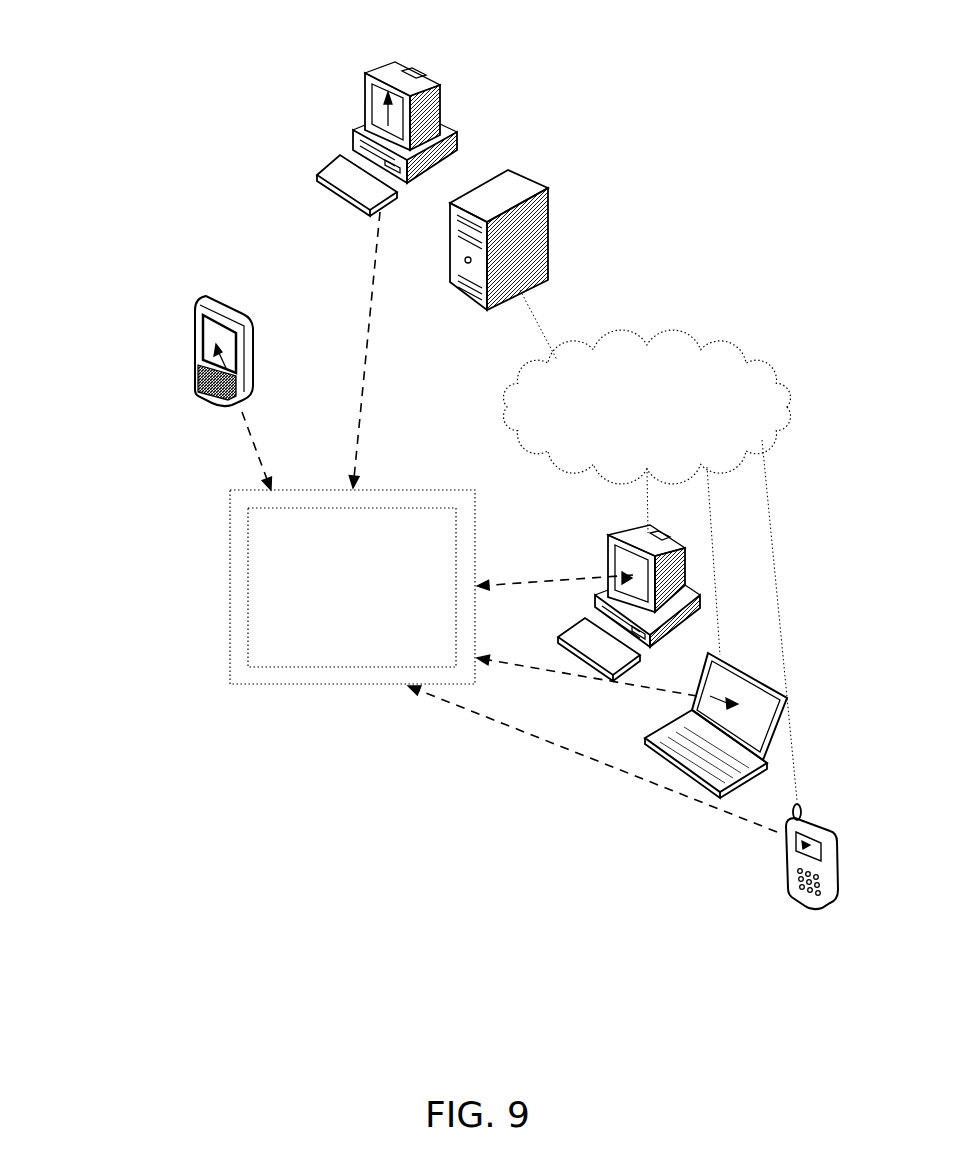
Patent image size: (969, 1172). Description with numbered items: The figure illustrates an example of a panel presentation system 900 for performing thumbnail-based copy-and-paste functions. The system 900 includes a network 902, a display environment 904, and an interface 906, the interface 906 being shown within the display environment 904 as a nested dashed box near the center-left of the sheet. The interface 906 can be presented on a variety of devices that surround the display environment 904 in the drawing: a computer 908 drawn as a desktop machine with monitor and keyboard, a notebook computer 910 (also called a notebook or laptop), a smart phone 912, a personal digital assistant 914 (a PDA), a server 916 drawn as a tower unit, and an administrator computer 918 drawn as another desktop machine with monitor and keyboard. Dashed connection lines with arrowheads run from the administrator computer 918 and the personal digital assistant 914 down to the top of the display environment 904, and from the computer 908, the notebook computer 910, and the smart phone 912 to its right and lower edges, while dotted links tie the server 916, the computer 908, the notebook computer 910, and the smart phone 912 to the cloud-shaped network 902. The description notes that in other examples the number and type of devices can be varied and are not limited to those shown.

The panel presentation system 900 is at (145, 98).
The network 902 is at (667, 446).
The display environment 904 is at (315, 488).
The interface 906 is at (372, 592).
The computer 908 is at (661, 534).
The notebook computer 910 is at (736, 661).
The smart phone 912 is at (811, 824).
The personal digital assistant 914 is at (223, 305).
The server 916 is at (528, 177).
The administrator computer 918 is at (428, 92).